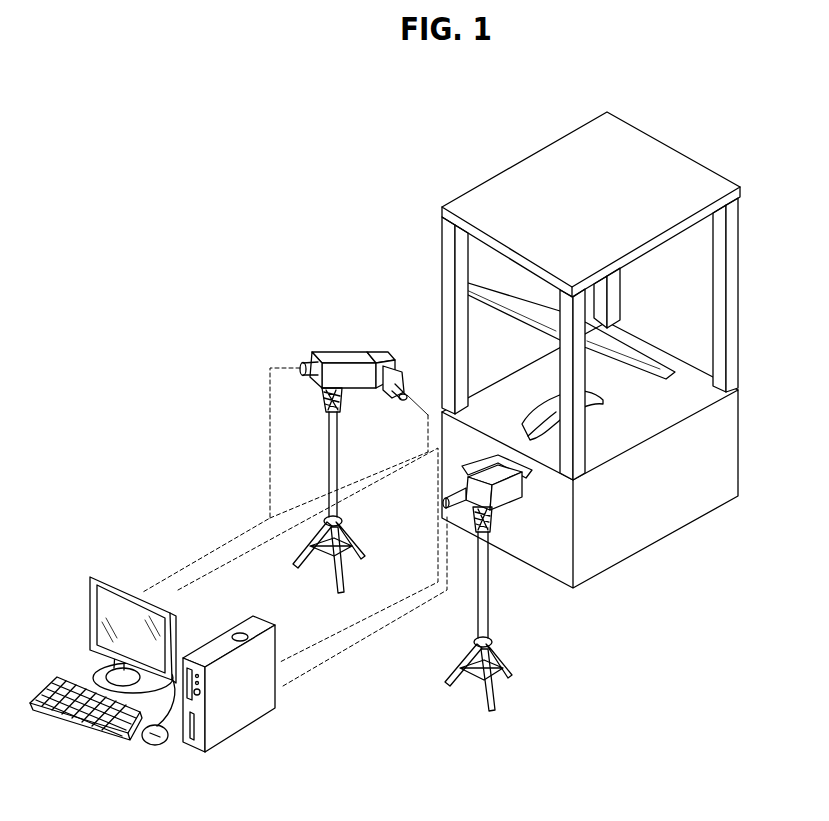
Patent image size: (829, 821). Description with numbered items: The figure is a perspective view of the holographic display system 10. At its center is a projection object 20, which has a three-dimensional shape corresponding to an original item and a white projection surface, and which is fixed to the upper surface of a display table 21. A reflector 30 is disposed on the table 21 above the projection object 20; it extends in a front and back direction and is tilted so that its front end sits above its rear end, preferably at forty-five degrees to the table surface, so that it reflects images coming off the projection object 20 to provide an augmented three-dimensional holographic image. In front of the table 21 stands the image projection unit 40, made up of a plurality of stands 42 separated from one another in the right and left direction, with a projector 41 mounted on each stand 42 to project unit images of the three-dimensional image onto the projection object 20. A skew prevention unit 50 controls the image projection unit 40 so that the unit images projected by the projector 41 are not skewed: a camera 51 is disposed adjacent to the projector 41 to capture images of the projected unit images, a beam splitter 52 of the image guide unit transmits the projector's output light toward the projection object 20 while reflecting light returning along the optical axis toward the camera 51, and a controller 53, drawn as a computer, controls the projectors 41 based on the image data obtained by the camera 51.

The holographic display system 10 is at (355, 228).
The projection object 20 is at (548, 408).
The display table 21 is at (727, 427).
The reflector 30 is at (643, 352).
The image projection unit 40 is at (295, 468).
The projector 41 is at (338, 355).
The stand 42 is at (490, 588).
The skew prevention unit 50 is at (395, 385).
The camera 51 is at (397, 377).
The beam splitter 52 is at (378, 362).
The controller 53 is at (243, 713).